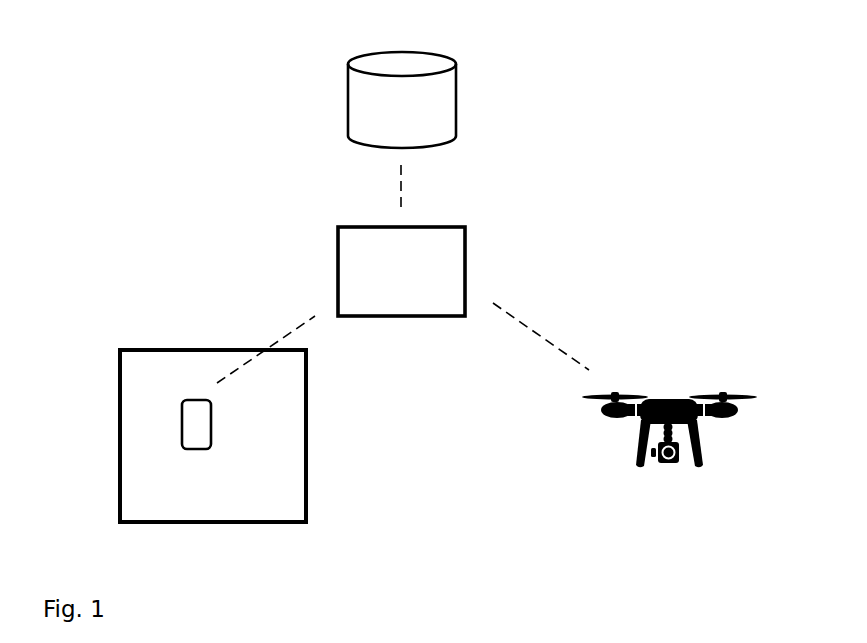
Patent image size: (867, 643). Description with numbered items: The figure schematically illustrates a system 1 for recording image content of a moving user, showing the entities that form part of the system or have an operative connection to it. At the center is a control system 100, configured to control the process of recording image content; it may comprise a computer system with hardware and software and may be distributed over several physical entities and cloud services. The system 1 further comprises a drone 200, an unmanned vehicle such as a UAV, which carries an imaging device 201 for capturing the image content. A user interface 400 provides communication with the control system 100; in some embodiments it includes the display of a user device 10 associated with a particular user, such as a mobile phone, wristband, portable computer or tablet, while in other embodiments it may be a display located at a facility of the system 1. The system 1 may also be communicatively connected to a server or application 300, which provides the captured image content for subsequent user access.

The system 1 is at (205, 103).
The user device 10 is at (217, 425).
The control system 100 is at (421, 282).
The drone 200 is at (702, 455).
The imaging device 201 is at (668, 464).
The server or application 300 is at (421, 120).
The user interface 400 is at (118, 383).